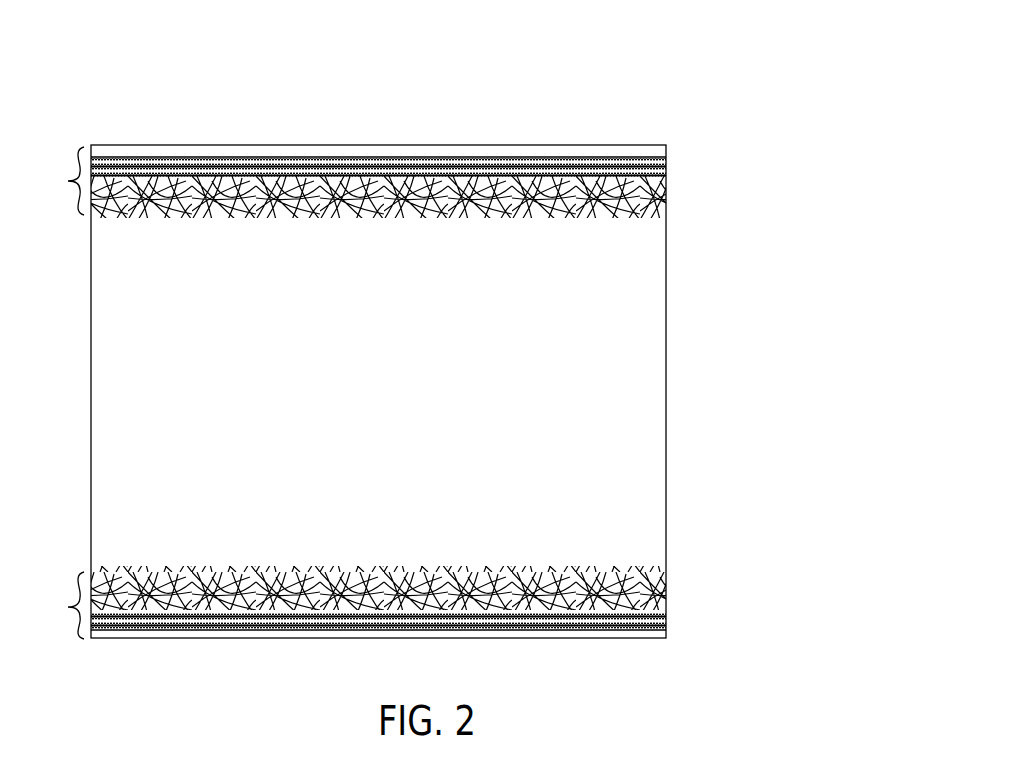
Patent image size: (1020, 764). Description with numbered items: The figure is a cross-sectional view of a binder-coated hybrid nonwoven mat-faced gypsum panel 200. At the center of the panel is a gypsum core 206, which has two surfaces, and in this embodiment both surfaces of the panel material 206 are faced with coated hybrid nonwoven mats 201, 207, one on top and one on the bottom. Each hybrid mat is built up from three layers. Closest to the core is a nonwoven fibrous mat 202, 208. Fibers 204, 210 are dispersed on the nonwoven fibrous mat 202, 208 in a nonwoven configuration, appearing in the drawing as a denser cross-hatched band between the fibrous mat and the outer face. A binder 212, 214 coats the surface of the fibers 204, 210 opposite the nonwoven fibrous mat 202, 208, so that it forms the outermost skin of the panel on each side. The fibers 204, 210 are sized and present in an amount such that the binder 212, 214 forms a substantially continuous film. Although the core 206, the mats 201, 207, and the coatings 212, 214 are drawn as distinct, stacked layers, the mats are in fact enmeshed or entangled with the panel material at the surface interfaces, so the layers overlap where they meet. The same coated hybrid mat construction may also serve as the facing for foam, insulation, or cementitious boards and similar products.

The gypsum panel 200 is at (420, 93).
The hybrid nonwoven mat 201 is at (55, 181).
The nonwoven fibrous mat 202 is at (664, 192).
The fibers 204 is at (672, 158).
The gypsum core 206 is at (648, 410).
The hybrid nonwoven mat 207 is at (55, 605).
The nonwoven fibrous mat 208 is at (657, 592).
The fibers 210 is at (666, 610).
The binder 212 is at (630, 145).
The binder 214 is at (629, 640).